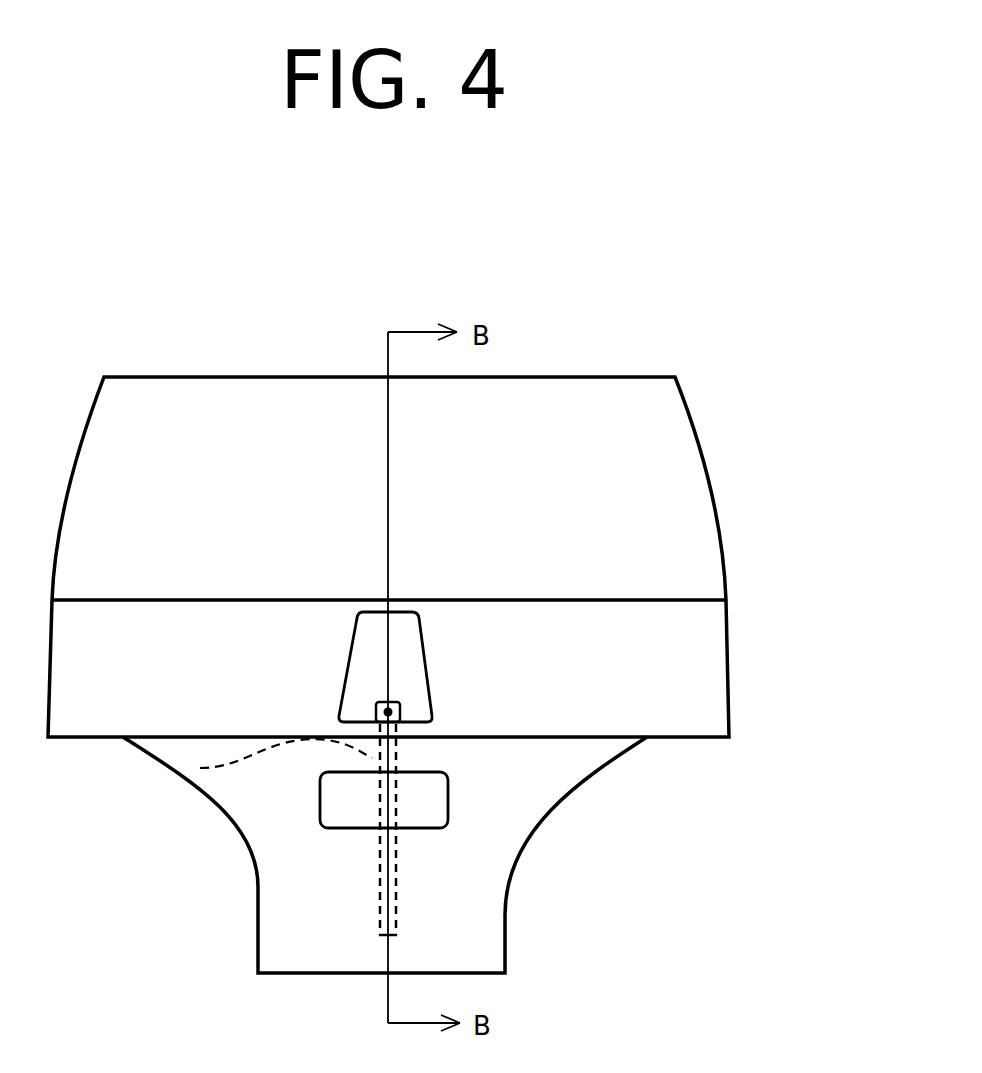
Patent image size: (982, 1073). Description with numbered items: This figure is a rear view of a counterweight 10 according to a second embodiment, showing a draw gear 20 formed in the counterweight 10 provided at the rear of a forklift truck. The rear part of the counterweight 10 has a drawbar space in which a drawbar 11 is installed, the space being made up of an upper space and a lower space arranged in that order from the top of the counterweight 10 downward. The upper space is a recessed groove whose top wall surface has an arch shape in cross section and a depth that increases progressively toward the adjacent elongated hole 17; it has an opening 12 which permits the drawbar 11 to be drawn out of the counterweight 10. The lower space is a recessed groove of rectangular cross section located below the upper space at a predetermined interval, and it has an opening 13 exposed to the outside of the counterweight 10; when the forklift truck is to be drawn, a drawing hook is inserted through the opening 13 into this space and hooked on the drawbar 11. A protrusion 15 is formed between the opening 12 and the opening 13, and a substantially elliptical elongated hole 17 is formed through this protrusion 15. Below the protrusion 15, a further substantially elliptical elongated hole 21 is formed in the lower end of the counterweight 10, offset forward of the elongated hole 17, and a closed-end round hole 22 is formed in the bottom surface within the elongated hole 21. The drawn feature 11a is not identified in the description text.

The counterweight 10 is at (668, 422).
The drawbar 11 is at (385, 800).
The mounting hole 11a is at (400, 710).
The opening 12 is at (420, 643).
The opening 13 is at (448, 802).
The protrusion 15 is at (423, 757).
The elongated hole 17 is at (200, 768).
The draw gear 20 is at (292, 647).
The elongated hole 21 is at (375, 893).
The round hole 22 is at (375, 923).